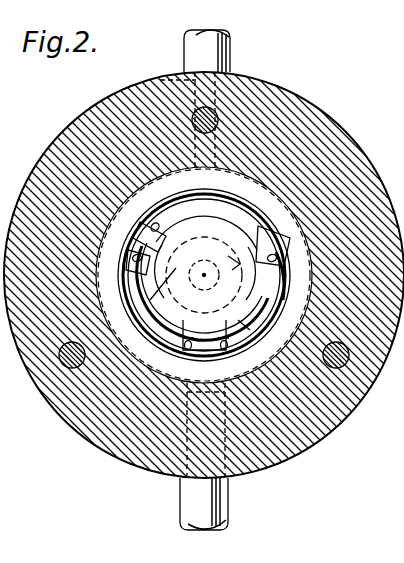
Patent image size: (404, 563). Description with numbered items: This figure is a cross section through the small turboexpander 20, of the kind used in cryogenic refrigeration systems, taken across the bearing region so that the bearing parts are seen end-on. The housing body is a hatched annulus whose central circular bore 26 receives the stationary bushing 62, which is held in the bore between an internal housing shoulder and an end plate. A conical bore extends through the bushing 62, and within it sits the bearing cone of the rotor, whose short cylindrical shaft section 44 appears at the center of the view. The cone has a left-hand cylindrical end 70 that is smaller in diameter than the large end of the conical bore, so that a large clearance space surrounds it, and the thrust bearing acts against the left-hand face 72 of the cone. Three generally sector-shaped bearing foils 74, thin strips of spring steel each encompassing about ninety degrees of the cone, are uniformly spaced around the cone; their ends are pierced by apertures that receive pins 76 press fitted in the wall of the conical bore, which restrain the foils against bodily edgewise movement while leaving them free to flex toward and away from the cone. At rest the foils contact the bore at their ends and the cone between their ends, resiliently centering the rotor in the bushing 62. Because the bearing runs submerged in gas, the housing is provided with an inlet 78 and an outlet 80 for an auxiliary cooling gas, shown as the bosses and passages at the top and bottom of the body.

The turboexpander 20 is at (293, 86).
The bore 26 is at (262, 190).
The shaft section 44 is at (247, 337).
The bushing 62 is at (207, 352).
The cylindrical end 70 is at (246, 257).
The left-hand face 72 is at (246, 338).
The bearing foils 74 is at (221, 246).
The pins 76 is at (160, 224).
The inlet 78 is at (228, 493).
The outlet 80 is at (162, 78).